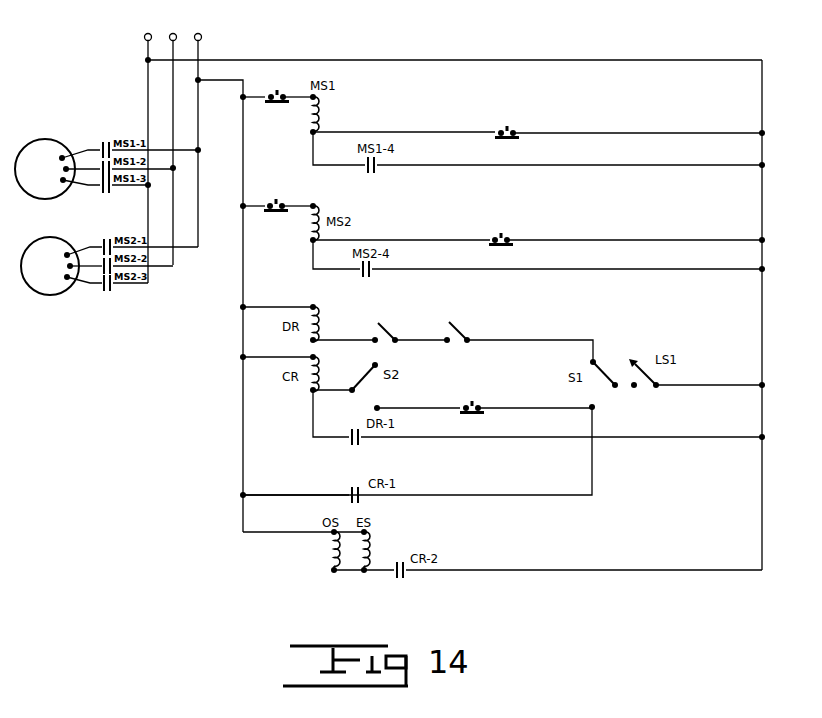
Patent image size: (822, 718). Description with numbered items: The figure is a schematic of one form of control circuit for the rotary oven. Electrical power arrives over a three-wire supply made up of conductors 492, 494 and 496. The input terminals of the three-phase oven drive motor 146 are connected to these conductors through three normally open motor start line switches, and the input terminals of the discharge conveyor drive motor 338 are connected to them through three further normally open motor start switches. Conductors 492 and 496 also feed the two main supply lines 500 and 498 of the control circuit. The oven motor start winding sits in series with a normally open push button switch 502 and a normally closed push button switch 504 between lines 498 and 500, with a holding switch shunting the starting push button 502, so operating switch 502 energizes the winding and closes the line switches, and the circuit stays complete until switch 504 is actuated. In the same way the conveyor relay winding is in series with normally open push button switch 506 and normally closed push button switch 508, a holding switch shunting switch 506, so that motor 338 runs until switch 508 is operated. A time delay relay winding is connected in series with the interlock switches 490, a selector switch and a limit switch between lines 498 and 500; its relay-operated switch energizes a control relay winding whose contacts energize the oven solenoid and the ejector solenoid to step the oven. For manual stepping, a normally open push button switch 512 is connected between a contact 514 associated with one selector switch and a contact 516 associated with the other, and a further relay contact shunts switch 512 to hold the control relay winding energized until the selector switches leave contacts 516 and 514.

The three-phase oven drive motor 146 is at (30, 195).
The discharge conveyor drive motor 338 is at (52, 295).
The interlock switches 490 is at (387, 331).
The supply conductor 492 is at (148, 84).
The supply conductor 494 is at (177, 38).
The supply conductor 496 is at (200, 137).
The main supply line 498 is at (243, 188).
The main supply line 500 is at (762, 107).
The normally open push button switch 502 is at (510, 126).
The normally closed push button switch 504 is at (285, 82).
The normally open push button switch 506 is at (505, 233).
The normally closed push button switch 508 is at (284, 206).
The normally open push button switch 512 is at (478, 402).
The contact 514 is at (379, 406).
The contact 516 is at (596, 409).